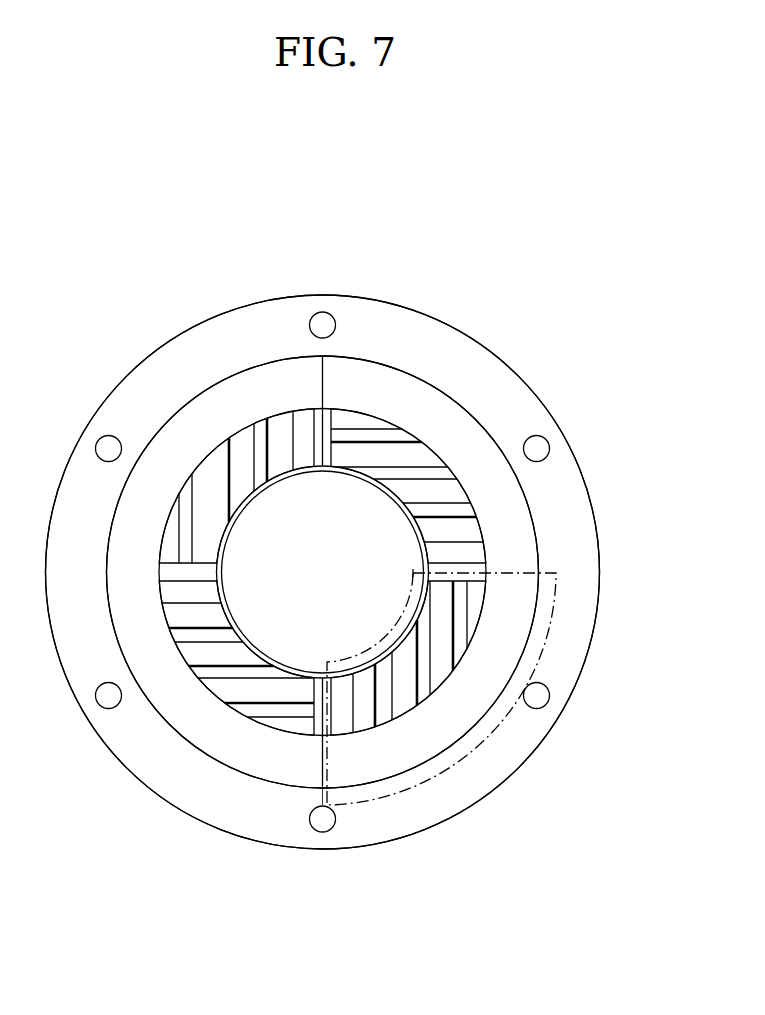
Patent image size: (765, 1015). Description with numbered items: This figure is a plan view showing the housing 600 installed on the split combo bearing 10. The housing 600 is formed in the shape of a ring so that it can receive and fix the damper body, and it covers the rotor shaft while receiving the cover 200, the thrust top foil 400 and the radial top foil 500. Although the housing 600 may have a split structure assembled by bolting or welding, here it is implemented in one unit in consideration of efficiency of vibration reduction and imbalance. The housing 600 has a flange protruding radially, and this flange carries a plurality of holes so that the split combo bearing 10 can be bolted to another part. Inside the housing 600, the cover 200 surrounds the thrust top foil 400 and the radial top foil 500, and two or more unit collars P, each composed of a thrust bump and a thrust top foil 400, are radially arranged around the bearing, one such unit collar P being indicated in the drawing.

The split combo bearing 10 is at (358, 274).
The cover 200 is at (447, 419).
The thrust top foil 400 is at (463, 528).
The radial top foil 500 is at (287, 472).
The housing 600 is at (415, 335).
The unit collar P is at (472, 753).